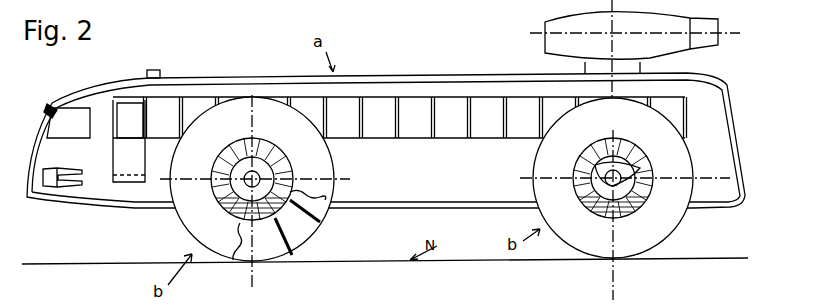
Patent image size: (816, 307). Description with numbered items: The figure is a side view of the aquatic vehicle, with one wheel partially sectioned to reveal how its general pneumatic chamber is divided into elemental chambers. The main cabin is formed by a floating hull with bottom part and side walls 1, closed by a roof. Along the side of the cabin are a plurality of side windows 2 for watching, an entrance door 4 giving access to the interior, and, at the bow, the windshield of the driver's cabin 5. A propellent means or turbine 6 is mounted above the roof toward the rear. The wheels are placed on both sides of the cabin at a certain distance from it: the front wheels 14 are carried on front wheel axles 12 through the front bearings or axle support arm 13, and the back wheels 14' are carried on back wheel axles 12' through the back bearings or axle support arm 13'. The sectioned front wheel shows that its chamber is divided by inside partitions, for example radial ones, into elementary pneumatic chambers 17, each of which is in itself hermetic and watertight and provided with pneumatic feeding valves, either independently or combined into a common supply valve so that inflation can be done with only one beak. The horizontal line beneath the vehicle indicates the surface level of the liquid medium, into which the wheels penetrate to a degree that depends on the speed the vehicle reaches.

The floating hull of the main cabin 1 is at (405, 197).
The side windows 2 is at (450, 108).
The doors 4 is at (130, 113).
The windshield in driver's cabin 5 is at (65, 132).
The propellent means or turbine 6 is at (558, 26).
The front wheel axles 12 is at (320, 215).
The axles support arm 13 is at (245, 214).
The front wheels 14 is at (237, 179).
The elementary pneumatic chambers 17 is at (304, 261).
The back wheel axles 12' is at (652, 202).
The axles support arm 13' is at (624, 210).
The back wheels 14' is at (613, 191).